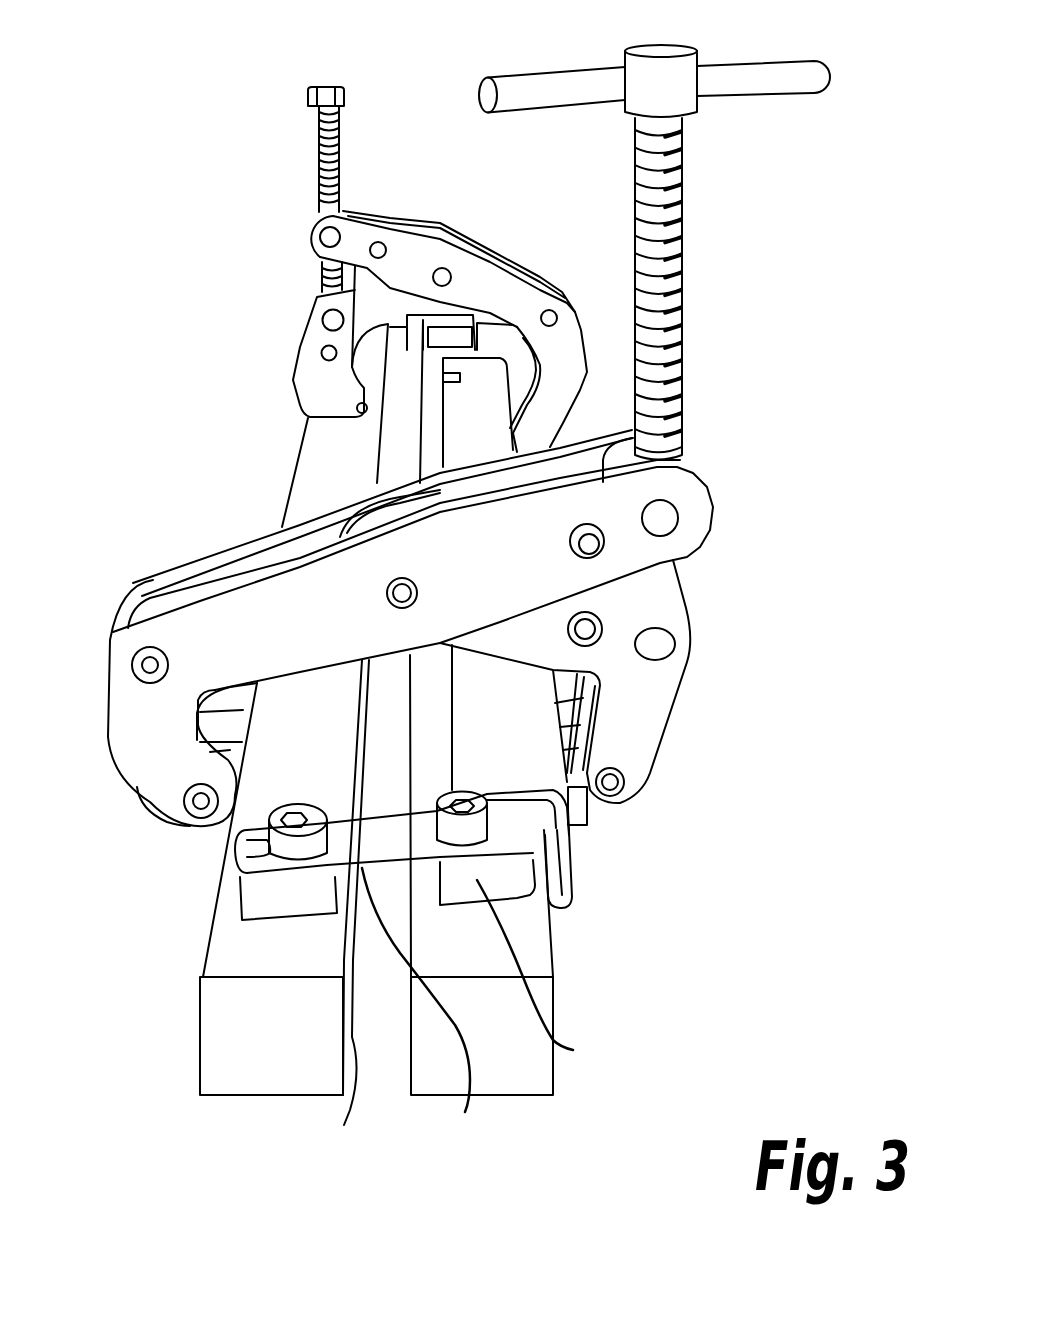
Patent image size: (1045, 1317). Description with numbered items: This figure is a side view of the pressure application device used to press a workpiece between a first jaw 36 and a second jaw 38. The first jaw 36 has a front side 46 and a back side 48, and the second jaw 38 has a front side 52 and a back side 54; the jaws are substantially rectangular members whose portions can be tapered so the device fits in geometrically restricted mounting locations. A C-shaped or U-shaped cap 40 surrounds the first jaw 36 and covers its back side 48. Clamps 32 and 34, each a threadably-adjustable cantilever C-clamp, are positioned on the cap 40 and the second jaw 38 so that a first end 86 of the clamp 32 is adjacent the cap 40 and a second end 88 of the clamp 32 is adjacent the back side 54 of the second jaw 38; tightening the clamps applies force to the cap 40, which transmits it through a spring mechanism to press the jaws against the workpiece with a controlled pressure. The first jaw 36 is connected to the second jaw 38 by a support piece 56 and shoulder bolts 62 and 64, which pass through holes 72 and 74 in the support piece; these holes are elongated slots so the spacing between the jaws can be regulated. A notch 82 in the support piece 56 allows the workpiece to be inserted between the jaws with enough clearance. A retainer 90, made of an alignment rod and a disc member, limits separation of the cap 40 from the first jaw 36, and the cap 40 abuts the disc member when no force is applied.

The clamp 32 is at (667, 680).
The clamp 34 is at (309, 346).
The first jaw 36 is at (534, 1070).
The second jaw 38 is at (242, 1035).
The cap 40 is at (557, 910).
The front side 46 is at (410, 1082).
The back side 48 is at (553, 1005).
The front side 52 is at (344, 1118).
The back side 54 is at (203, 957).
The support piece 56 is at (546, 979).
The shoulder bolt 62 is at (296, 845).
The shoulder bolt 64 is at (480, 803).
The hole 72 is at (252, 845).
The hole 74 is at (512, 812).
The notch 82 is at (421, 1010).
The first end 86 is at (647, 778).
The second end 88 is at (112, 703).
The retainer 90 is at (579, 792).